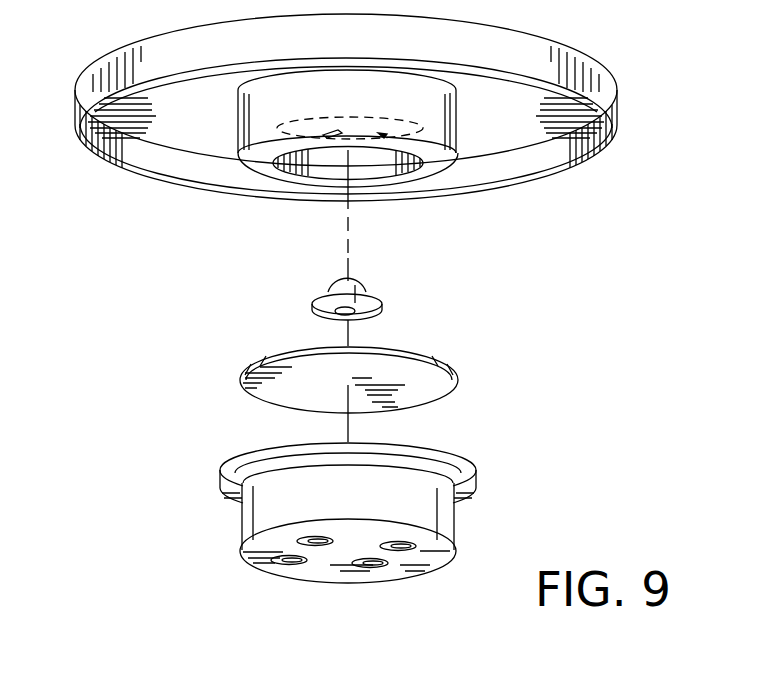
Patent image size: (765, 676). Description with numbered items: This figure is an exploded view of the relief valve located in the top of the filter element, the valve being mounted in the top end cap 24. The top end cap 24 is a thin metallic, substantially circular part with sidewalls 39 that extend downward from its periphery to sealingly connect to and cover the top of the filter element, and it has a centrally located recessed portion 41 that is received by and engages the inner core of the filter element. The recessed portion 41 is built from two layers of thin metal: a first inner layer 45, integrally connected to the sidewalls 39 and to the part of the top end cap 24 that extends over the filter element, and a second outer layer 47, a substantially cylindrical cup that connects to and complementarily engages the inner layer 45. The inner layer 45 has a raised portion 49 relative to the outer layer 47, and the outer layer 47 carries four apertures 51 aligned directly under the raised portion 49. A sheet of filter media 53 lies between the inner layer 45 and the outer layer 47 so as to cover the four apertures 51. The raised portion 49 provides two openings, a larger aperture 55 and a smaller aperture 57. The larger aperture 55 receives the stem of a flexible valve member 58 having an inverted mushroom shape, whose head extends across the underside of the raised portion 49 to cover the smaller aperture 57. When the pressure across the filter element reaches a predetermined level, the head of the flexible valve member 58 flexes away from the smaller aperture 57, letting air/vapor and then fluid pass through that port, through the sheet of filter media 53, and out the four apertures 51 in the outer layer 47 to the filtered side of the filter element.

The top end cap 24 is at (593, 46).
The sidewalls 39 is at (617, 107).
The recessed portion 41 is at (458, 131).
The first inner layer 45 is at (260, 130).
The raised portion 49 is at (308, 170).
The apertures 51 is at (318, 548).
The sheet of filter media 53 is at (436, 382).
The larger aperture 55 is at (327, 132).
The smaller aperture 57 is at (381, 136).
The flexible valve member 58 is at (382, 302).
The second outer layer 47 is at (452, 512).